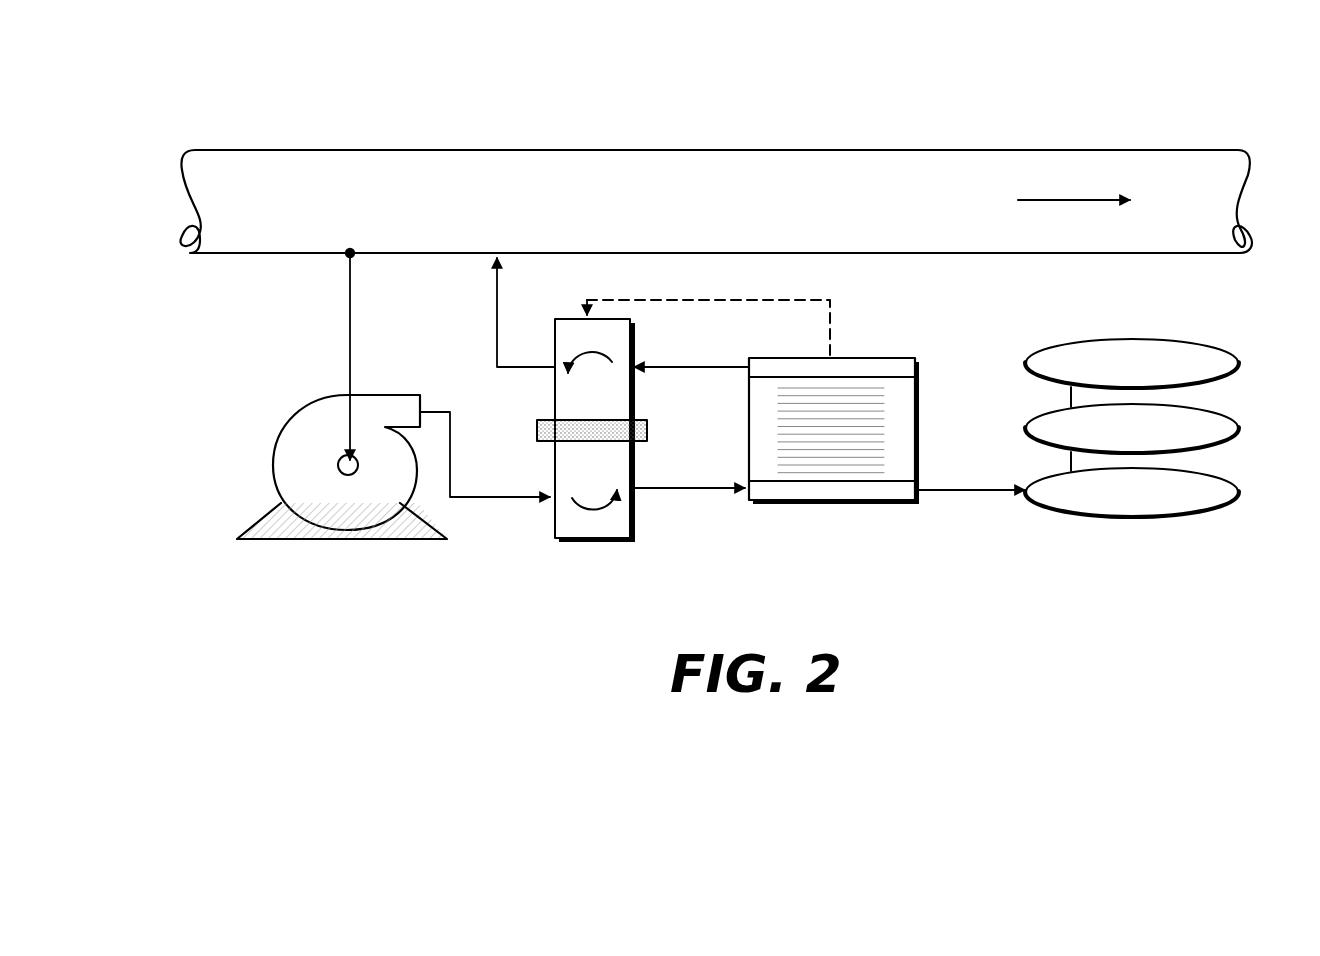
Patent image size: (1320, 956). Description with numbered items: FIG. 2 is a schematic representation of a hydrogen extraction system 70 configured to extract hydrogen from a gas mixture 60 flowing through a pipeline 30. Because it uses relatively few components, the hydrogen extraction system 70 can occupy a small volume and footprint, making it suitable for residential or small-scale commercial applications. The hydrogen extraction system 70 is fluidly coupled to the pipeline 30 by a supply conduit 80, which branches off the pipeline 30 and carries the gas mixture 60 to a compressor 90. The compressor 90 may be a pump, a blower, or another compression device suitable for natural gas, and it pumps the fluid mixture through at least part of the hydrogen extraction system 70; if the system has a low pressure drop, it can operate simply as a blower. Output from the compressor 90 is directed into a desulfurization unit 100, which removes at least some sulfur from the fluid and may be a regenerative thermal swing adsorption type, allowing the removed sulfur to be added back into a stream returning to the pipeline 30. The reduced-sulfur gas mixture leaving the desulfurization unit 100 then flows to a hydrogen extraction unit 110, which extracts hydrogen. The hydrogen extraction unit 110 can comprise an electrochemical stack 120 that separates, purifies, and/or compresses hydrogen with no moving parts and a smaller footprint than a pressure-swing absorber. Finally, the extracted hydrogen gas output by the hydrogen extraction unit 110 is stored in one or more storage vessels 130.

The pipeline 30 is at (768, 128).
The gas mixture 60 is at (1002, 211).
The hydrogen extraction system 70 is at (178, 615).
The supply conduit 80 is at (348, 320).
The compressor 90 is at (270, 458).
The desulfurization unit 100 is at (594, 545).
The hydrogen extraction unit 110 is at (828, 505).
The electrochemical stack 120 is at (893, 443).
The storage vessels 130 is at (1195, 521).